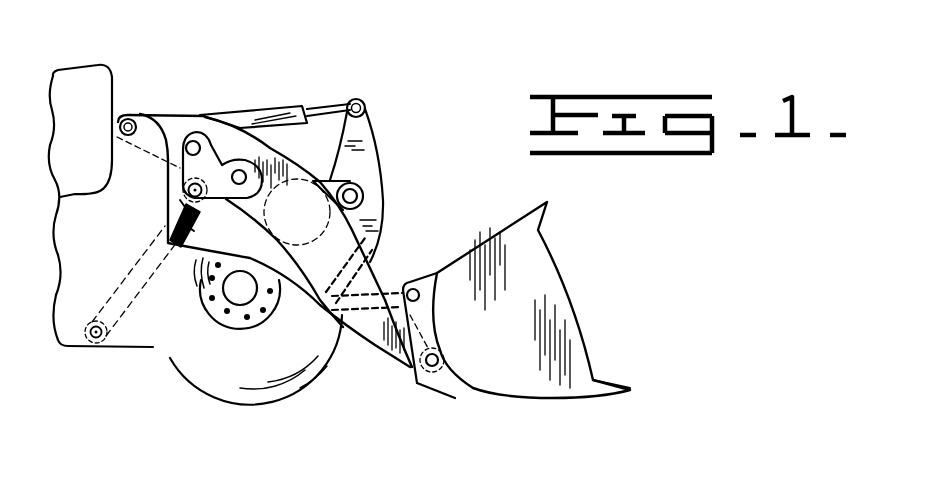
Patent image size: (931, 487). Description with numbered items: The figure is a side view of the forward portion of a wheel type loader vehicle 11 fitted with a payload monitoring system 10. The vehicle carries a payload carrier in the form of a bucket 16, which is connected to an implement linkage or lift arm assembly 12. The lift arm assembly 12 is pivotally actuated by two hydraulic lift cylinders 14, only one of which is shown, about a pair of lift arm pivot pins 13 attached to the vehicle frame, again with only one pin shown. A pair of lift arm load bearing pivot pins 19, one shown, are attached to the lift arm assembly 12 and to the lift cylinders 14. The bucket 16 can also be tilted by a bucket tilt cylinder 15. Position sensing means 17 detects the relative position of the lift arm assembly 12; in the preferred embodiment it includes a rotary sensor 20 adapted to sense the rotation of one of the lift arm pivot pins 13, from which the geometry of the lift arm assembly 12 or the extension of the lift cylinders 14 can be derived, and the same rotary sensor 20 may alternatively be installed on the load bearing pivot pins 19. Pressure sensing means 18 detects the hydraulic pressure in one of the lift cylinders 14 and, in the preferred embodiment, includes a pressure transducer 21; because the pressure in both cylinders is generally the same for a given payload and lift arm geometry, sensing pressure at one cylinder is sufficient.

The payload monitoring system 10 is at (530, 50).
The wheel type loader vehicle 11 is at (101, 206).
The lift arm assembly 12 is at (192, 124).
The lift arm pivot pin 13 is at (120, 112).
The hydraulic lift cylinder 14 is at (188, 226).
The bucket tilt cylinder 15 is at (274, 110).
The bucket 16 is at (494, 240).
The position sensing means 17 is at (163, 72).
The pressure sensing means 18 is at (160, 294).
The lift arm load bearing pivot pin 19 is at (186, 190).
The rotary sensor 20 is at (142, 112).
The pressure transducer 21 is at (150, 250).